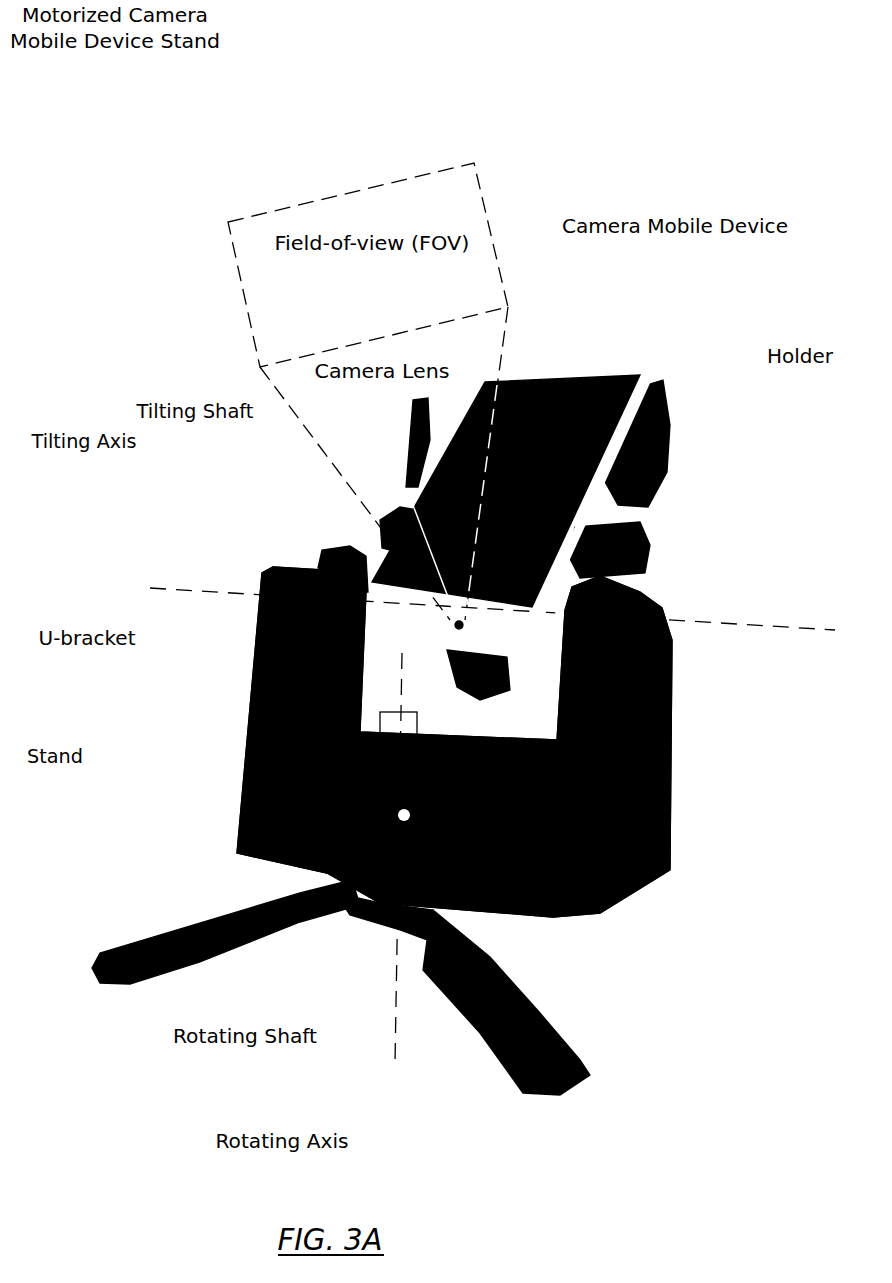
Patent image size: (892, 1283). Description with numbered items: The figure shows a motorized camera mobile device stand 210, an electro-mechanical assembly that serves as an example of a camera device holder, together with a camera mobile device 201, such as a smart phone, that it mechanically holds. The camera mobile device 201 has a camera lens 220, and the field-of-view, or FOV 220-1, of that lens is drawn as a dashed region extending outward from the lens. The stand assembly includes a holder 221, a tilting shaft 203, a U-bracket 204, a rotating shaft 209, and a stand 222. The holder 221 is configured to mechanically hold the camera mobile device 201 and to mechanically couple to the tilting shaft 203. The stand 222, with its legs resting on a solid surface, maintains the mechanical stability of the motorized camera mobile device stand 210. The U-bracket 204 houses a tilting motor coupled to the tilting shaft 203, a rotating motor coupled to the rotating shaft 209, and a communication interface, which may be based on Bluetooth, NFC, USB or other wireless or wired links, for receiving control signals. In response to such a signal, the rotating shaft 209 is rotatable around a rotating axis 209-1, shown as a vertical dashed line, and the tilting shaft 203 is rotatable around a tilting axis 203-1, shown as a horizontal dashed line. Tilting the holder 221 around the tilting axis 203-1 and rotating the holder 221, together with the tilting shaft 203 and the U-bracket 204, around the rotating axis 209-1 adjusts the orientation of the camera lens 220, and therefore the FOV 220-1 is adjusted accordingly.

The motorized camera mobile device stand 210 is at (196, 136).
The camera mobile device 201 is at (595, 330).
The camera lens 220 is at (458, 622).
The FOV 220-1 is at (343, 282).
The holder 221 is at (682, 463).
The tilting shaft 203 is at (297, 541).
The tilting axis 203-1 is at (186, 569).
The U-bracket 204 is at (218, 729).
The stand 222 is at (150, 908).
The rotating shaft 209 is at (336, 939).
The rotating axis 209-1 is at (369, 1053).